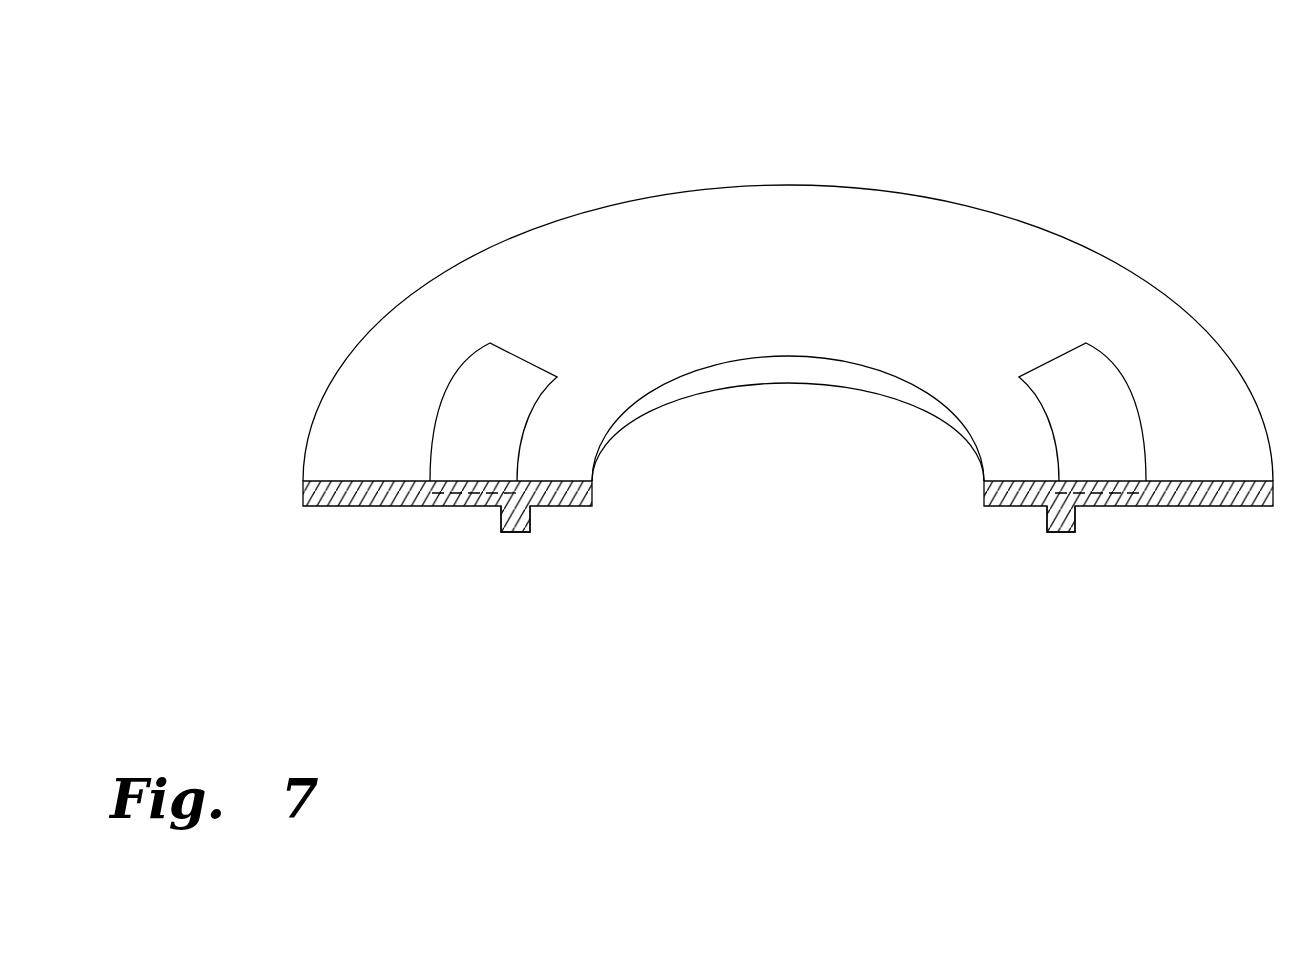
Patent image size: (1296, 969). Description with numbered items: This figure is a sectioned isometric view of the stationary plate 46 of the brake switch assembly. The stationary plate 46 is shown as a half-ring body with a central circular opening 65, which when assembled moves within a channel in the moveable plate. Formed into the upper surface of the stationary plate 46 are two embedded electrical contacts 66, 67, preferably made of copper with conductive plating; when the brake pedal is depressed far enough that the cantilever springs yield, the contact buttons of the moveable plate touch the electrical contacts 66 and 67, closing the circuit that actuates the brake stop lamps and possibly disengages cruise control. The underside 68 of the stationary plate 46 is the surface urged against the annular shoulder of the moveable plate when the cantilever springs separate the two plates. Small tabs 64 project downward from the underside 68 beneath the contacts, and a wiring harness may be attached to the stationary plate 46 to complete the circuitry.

The stationary plate 46 is at (930, 185).
The locating tab 64 is at (517, 533).
The circular opening 65 is at (593, 487).
The electrical contact 66 is at (475, 404).
The electrical contact 67 is at (1101, 404).
The underside 68 is at (1003, 508).